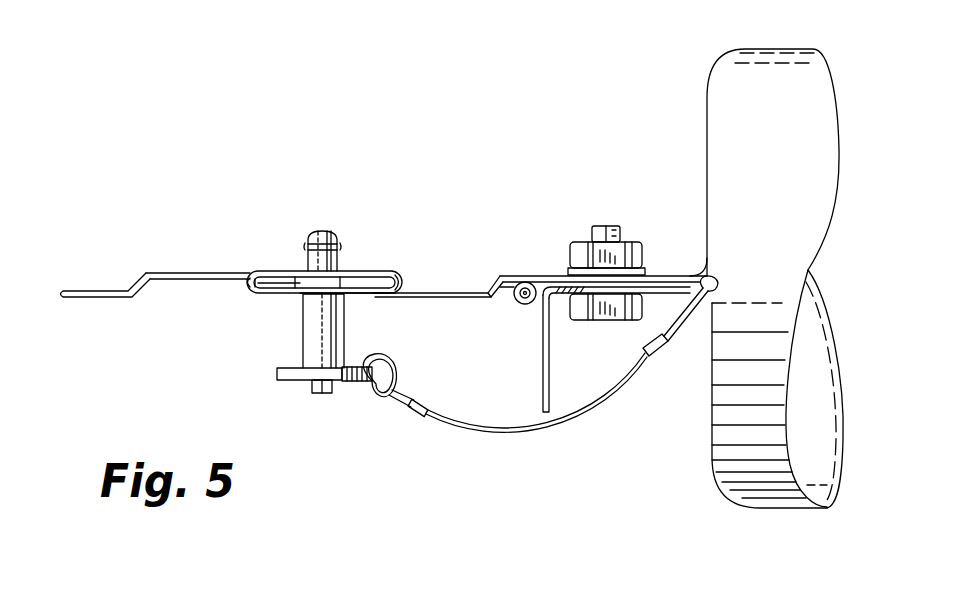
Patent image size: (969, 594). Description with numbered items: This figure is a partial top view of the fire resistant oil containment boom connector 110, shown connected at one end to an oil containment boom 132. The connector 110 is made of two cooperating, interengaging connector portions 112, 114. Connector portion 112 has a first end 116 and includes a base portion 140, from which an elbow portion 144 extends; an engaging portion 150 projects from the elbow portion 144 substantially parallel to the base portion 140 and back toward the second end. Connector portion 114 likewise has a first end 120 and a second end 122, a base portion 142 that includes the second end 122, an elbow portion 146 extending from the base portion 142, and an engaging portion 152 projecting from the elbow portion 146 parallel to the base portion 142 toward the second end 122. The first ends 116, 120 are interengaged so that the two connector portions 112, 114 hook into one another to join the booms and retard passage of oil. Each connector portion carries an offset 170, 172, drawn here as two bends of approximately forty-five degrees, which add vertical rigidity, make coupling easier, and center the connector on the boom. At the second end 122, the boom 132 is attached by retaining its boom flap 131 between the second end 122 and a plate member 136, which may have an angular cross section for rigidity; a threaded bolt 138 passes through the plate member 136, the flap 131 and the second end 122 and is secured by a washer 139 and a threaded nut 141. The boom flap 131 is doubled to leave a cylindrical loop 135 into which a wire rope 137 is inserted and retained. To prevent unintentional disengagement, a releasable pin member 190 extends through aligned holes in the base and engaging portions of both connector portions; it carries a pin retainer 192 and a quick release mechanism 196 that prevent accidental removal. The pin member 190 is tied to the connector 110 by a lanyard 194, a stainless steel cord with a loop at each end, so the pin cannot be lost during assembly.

The boom connector 110 is at (410, 136).
The connector portion 112 is at (173, 272).
The connector portion 114 is at (426, 293).
The first end 116 is at (360, 271).
The first end 120 is at (274, 294).
The second end 122 is at (660, 275).
The boom flap 131 is at (550, 278).
The oil containment boom 132 is at (725, 371).
The cylindrical loop 135 is at (527, 305).
The plate member 136 is at (560, 371).
The wire rope 137 is at (525, 290).
The threaded bolt 138 is at (615, 321).
The washer 139 is at (563, 272).
The base portion 140 is at (297, 270).
The threaded nut 141 is at (638, 240).
The base portion 142 is at (378, 295).
The elbow portion 144 is at (402, 278).
The elbow portion 146 is at (250, 288).
The engaging portion 150 is at (260, 276).
The engaging portion 152 is at (334, 271).
The offset 170 is at (128, 290).
The offset 172 is at (497, 306).
The pin member 190 is at (307, 351).
The pin retainer 192 is at (340, 243).
The lanyard 194 is at (498, 431).
The quick release mechanism 196 is at (322, 394).